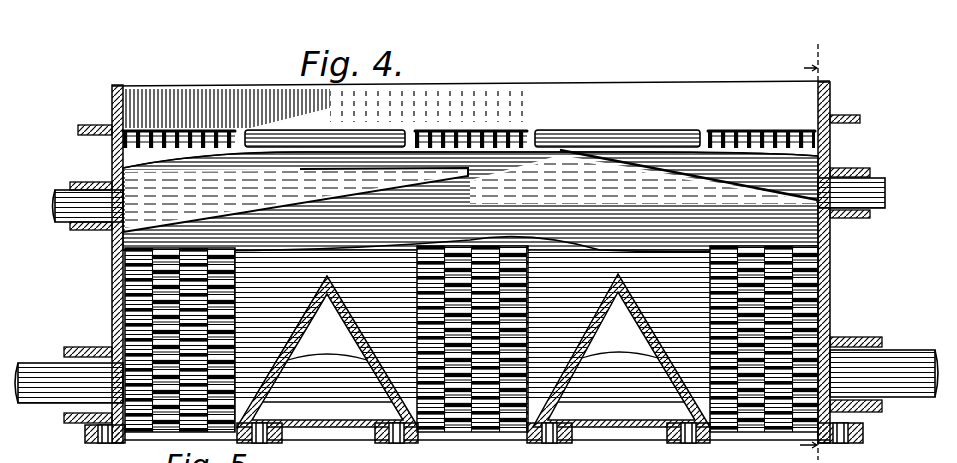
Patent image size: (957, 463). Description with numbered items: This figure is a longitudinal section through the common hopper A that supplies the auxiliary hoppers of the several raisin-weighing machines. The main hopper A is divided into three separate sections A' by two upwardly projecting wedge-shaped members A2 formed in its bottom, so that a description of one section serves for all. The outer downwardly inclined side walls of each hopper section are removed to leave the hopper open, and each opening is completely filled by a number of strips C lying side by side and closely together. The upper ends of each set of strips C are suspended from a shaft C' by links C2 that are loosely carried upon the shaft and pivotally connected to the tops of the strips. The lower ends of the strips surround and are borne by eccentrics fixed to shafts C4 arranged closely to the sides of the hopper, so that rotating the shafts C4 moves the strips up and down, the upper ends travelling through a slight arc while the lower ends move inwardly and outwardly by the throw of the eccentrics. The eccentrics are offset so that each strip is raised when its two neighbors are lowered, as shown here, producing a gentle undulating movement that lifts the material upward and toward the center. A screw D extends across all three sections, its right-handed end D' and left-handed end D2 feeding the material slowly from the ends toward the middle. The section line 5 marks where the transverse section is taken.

The hopper A is at (476, 258).
The hopper section A' is at (471, 88).
The wedge-shaped member A2 is at (343, 318).
The strip C is at (468, 339).
The shaft C' is at (472, 120).
The link C2 is at (205, 137).
The shaft C4 is at (645, 392).
The screw D is at (470, 171).
The right-handed end of screw D' is at (644, 177).
The left-handed end of screw D2 is at (295, 200).
The section line 5 is at (813, 253).